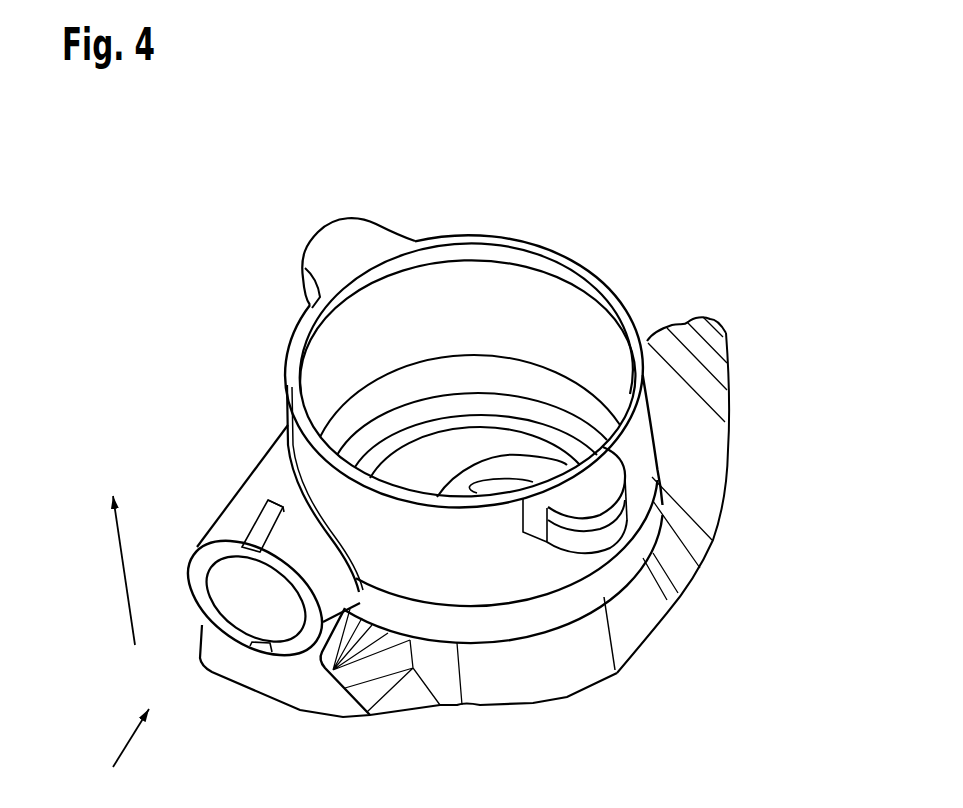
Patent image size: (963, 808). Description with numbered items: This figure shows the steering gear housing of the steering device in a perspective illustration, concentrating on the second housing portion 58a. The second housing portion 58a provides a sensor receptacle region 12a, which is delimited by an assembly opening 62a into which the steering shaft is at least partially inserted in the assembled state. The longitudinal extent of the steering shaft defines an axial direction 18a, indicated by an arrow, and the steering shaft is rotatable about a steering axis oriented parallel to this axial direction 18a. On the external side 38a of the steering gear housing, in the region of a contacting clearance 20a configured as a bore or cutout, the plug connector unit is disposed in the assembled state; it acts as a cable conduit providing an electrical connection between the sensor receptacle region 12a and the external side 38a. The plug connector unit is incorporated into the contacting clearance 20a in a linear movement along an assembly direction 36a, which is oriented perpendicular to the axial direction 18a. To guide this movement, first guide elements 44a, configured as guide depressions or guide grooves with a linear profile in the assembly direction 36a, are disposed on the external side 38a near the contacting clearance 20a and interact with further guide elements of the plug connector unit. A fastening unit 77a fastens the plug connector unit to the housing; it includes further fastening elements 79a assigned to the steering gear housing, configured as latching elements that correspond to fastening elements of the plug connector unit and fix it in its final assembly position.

The assembly opening 62a is at (526, 238).
The sensor receptacle region 12a is at (563, 290).
The external side 38a is at (212, 376).
The fastening unit 77a is at (263, 411).
The further fastening element 79a is at (270, 500).
The first guide element 44a is at (253, 519).
The second housing portion 58a is at (658, 438).
The axial direction 18a is at (127, 588).
The contacting clearance 20a is at (205, 612).
The assembly direction 36a is at (121, 743).